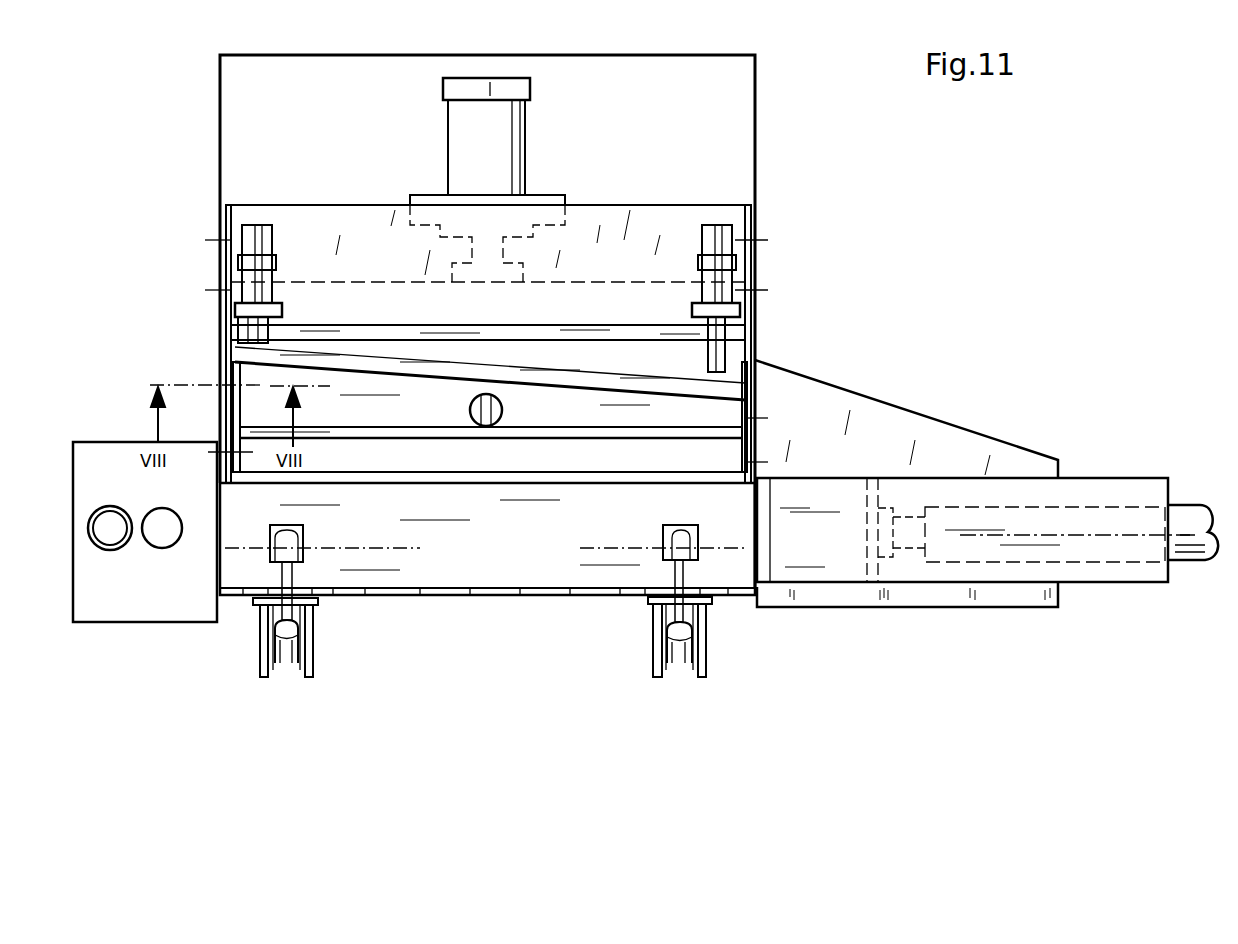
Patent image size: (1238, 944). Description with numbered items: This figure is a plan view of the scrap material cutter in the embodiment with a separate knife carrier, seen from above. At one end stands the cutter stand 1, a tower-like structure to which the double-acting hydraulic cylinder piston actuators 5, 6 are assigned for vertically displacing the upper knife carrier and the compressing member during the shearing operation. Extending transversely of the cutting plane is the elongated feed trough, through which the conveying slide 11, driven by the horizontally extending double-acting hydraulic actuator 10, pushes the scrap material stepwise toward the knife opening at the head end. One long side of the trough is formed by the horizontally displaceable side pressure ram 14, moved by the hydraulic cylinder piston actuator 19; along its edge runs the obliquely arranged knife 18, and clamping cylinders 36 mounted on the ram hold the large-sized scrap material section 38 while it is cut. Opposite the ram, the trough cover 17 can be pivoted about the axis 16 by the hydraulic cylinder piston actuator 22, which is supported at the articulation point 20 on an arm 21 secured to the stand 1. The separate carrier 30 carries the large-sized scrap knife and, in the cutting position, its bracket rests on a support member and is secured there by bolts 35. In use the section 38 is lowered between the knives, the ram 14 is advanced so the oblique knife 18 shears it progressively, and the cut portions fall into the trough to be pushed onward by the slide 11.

The cutter stand 1 is at (145, 580).
The hydraulic cylinder piston actuator 5 is at (100, 520).
The hydraulic cylinder piston actuator 6 is at (158, 518).
The hydraulic actuator 10 is at (1185, 527).
The conveying slide 11 is at (1050, 492).
The side pressure ram 14 is at (652, 218).
The axis 16 is at (748, 600).
The cover 17 is at (540, 570).
The knife 18 is at (752, 342).
The hydraulic cylinder piston actuator 19 is at (498, 88).
The articulation point 20 is at (284, 668).
The arm 21 is at (262, 660).
The hydraulic cylinder piston actuator 22 is at (300, 660).
The carrier 30 is at (572, 424).
The bolts 35 is at (213, 447).
The clamping cylinders 36 is at (253, 243).
The large-sized scrap material section 38 is at (760, 378).